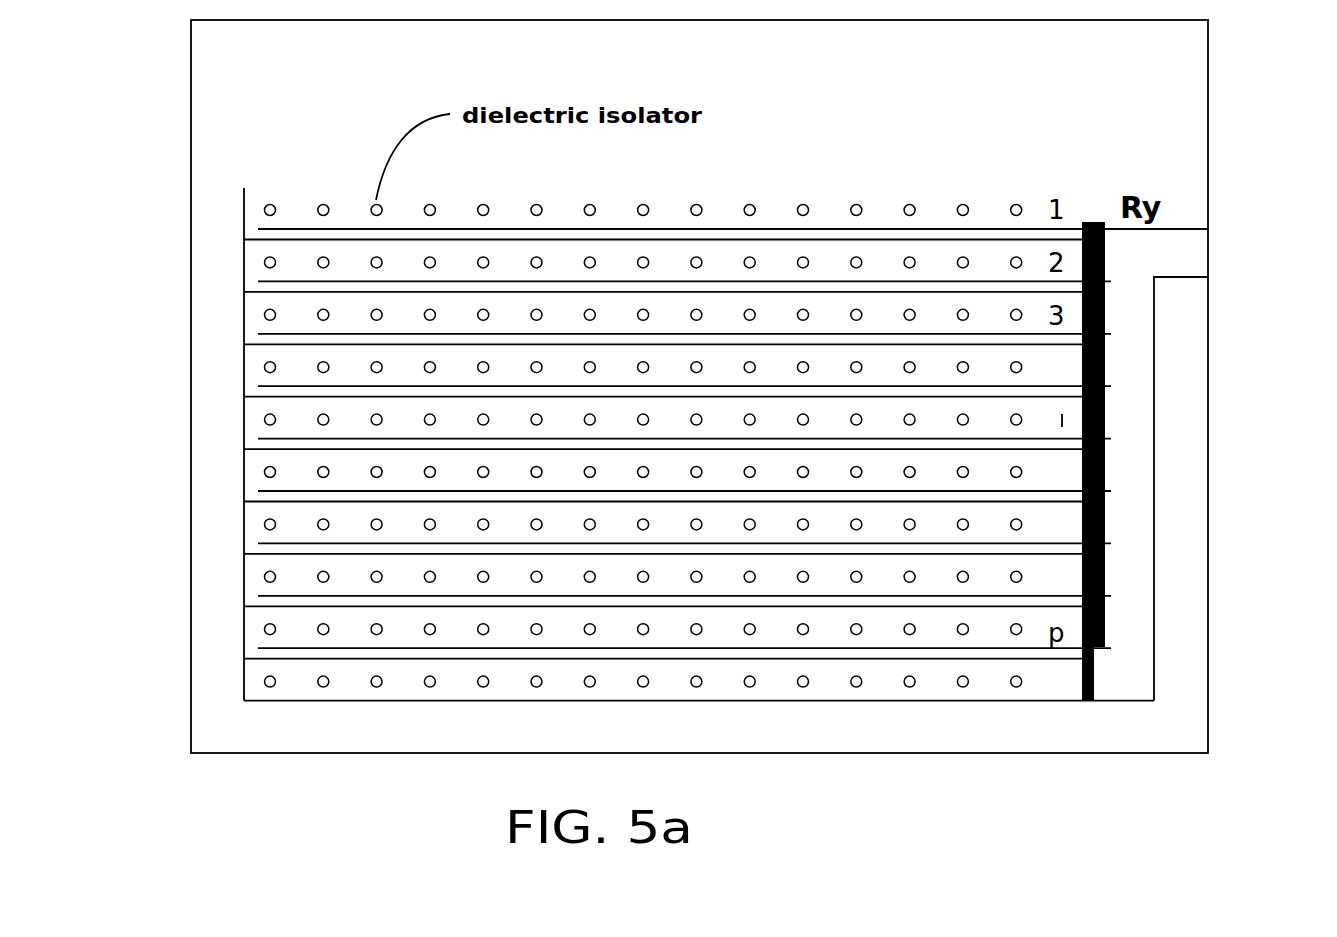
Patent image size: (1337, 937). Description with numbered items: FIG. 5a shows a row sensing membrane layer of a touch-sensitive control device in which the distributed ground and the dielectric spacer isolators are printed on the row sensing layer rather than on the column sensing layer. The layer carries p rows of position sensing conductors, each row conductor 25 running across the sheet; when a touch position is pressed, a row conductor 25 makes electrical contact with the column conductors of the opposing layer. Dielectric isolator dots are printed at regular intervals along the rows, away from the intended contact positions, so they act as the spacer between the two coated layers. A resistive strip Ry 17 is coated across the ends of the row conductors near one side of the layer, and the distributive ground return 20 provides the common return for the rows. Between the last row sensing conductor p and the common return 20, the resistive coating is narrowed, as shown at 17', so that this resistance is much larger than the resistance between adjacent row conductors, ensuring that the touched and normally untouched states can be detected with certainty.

The row conductor 25 is at (828, 227).
The common return 20 is at (328, 703).
The resistive strip Ry 17 is at (1194, 434).
The narrowed resistive coating portion 17' is at (1199, 659).